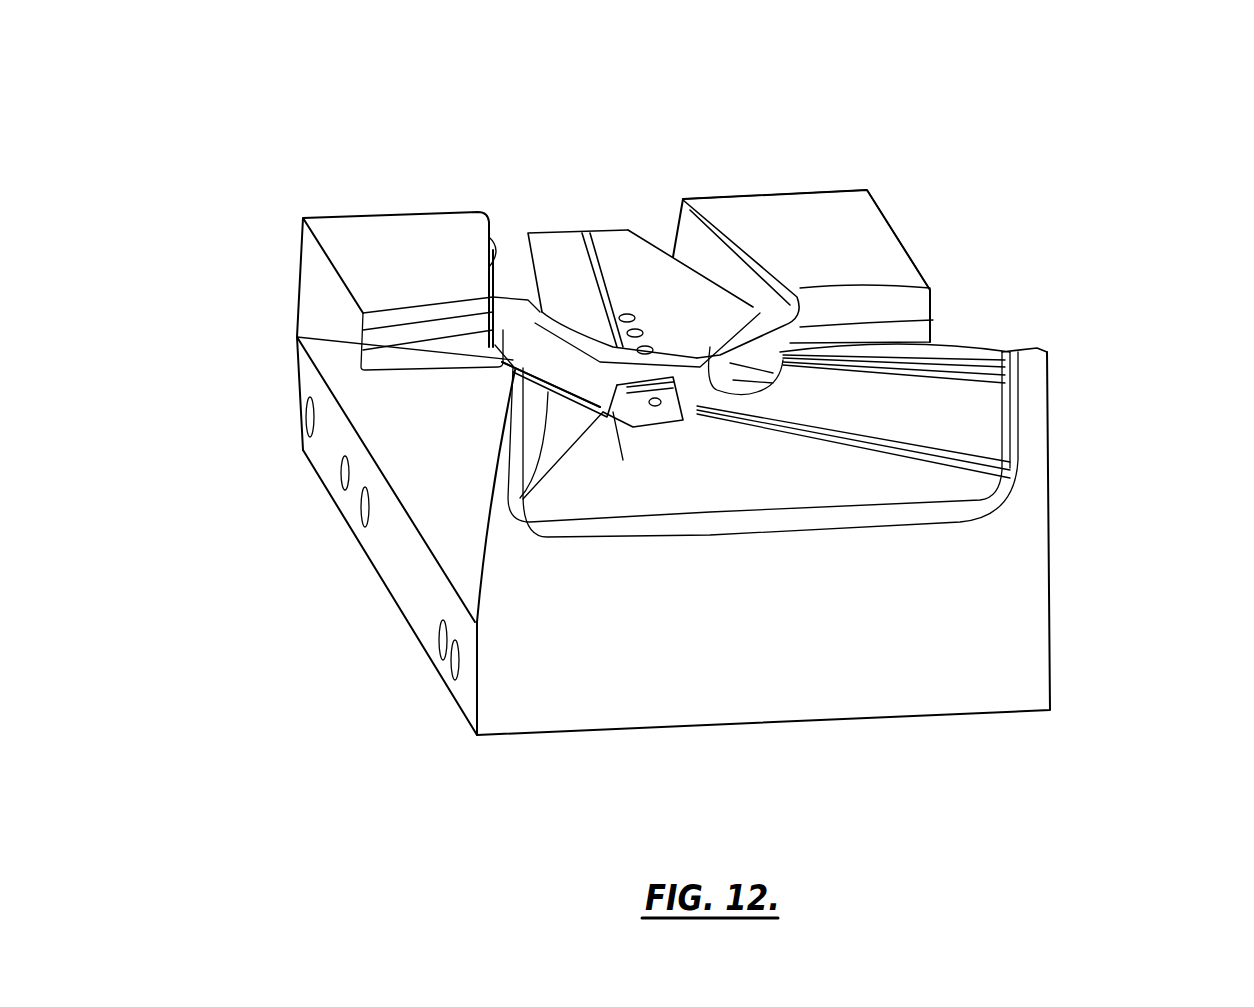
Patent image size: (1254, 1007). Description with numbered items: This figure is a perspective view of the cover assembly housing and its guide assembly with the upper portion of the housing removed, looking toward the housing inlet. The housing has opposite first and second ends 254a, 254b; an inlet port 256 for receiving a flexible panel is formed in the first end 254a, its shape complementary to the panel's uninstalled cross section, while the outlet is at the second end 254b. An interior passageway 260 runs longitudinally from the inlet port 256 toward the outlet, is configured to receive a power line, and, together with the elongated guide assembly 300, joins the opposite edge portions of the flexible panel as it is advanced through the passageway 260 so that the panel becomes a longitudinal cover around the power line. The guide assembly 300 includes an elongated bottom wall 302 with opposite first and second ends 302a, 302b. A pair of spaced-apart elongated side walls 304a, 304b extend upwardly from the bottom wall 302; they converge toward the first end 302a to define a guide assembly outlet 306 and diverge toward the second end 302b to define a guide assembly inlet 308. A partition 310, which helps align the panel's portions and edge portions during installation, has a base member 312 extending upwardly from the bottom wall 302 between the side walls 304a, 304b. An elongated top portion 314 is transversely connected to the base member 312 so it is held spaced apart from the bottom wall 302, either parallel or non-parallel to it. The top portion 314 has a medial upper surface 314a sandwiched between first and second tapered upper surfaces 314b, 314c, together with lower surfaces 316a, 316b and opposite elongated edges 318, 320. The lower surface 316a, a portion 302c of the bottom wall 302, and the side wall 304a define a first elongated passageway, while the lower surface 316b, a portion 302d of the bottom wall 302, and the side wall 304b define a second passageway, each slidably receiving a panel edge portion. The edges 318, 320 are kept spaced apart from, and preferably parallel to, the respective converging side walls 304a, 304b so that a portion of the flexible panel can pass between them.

The elongated guide assembly 300 is at (855, 173).
The cover assembly housing first end 254a is at (1007, 433).
The cover assembly housing second end 254b is at (487, 215).
The inlet port 256 is at (813, 500).
The interior passageway 260 is at (665, 489).
The elongated bottom wall 302 is at (613, 420).
The bottom wall first end 302a is at (480, 290).
The bottom wall second end 302b is at (603, 412).
The portion of the bottom wall 302c is at (513, 375).
The portion of the bottom wall 302d is at (745, 378).
The elongated side wall 304a is at (483, 213).
The elongated side wall 304b is at (675, 215).
The guide assembly outlet 306 is at (673, 240).
The guide assembly inlet 308 is at (800, 327).
The partition 310 is at (705, 288).
The base member 312 is at (680, 372).
The elongated top portion 314 is at (563, 250).
The medial upper surface 314a is at (617, 283).
The first tapered upper surface 314b is at (673, 248).
The second tapered upper surface 314c is at (540, 312).
The top portion lower surface 316a is at (512, 380).
The top portion lower surface 316b is at (745, 381).
The elongated edge 318 is at (513, 367).
The elongated edge 320 is at (800, 290).